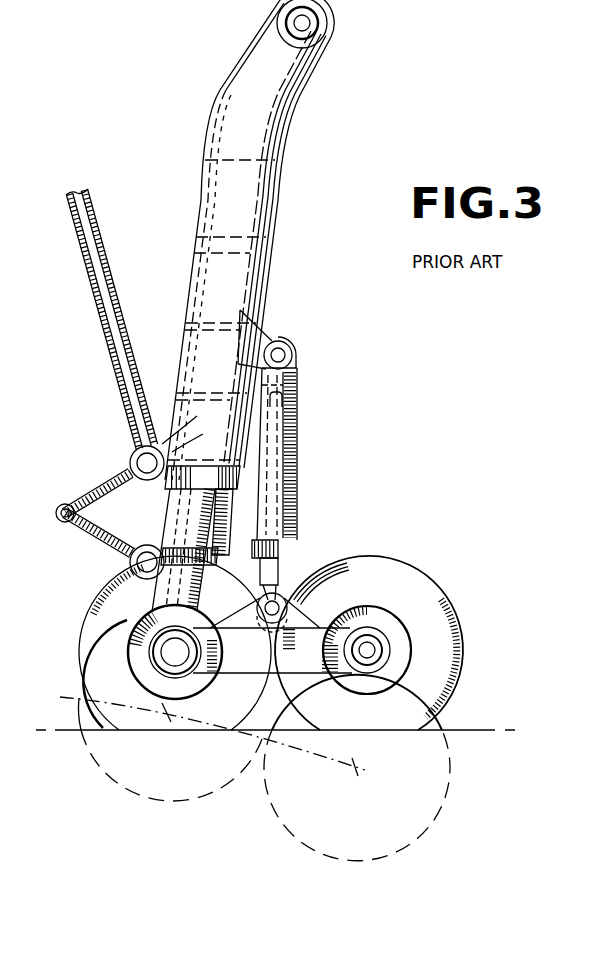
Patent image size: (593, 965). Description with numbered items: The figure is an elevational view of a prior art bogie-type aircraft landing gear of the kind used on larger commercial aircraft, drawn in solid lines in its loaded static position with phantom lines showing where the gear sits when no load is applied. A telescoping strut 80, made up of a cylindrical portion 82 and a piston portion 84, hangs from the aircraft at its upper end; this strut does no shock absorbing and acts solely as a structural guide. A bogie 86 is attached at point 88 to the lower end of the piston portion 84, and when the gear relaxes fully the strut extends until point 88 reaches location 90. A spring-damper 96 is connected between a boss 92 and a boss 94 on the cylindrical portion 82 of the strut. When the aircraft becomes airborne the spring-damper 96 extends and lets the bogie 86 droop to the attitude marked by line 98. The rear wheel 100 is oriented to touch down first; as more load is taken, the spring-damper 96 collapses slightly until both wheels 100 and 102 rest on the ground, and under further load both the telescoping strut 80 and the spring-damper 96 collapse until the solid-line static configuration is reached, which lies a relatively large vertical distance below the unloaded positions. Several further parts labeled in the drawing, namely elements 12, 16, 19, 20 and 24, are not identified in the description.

The telescoping boom section 12 is at (221, 530).
The lift strut 16 is at (133, 402).
The wheel rim 19 is at (320, 626).
The wheel hub 20 is at (371, 626).
The cylinder anchor bracket 24 is at (286, 594).
The telescoping strut 80 is at (318, 174).
The cylindrical portion 82 is at (293, 125).
The piston portion 84 is at (165, 531).
The bogie 86 is at (266, 763).
The point 88 is at (168, 651).
The location 90 is at (70, 703).
The boss 92 is at (258, 650).
The boss 94 is at (262, 325).
The spring-damper 96 is at (300, 423).
The line 98 is at (352, 771).
The rear wheel 100 is at (418, 588).
The wheel 102 is at (105, 582).